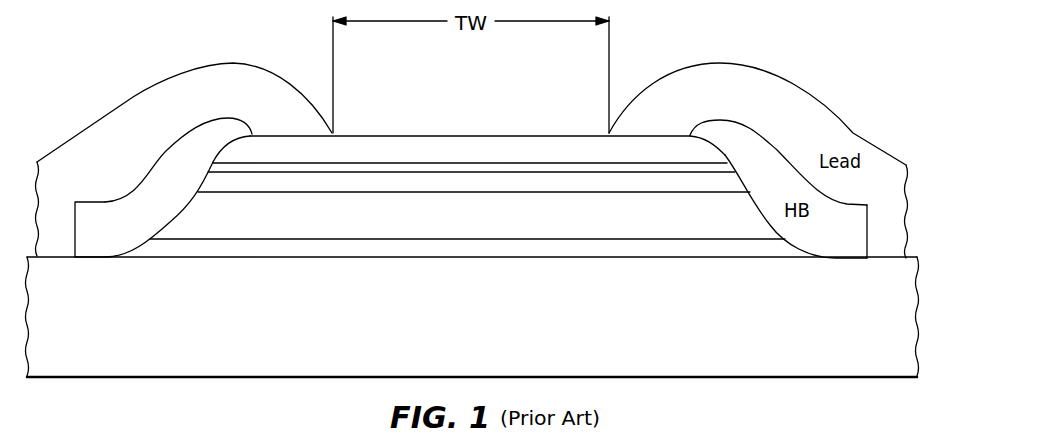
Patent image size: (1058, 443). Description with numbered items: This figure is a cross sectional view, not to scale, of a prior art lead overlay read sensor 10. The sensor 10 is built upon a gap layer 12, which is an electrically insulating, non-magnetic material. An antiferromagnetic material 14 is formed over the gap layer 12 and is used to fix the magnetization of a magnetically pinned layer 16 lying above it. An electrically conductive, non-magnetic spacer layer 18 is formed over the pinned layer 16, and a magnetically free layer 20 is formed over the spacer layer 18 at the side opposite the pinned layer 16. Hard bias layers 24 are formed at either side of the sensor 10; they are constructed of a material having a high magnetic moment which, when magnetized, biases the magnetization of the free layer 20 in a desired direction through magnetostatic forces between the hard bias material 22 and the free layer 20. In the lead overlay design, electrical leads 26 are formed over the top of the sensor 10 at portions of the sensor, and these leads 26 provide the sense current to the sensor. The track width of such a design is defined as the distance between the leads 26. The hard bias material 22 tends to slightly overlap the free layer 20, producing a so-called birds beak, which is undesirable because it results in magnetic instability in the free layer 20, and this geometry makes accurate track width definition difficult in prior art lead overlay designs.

The read sensor 10 is at (469, 135).
The gap layer 12 is at (812, 372).
The antiferromagnetic material 14 is at (447, 234).
The magnetically pinned layer 16 is at (544, 184).
The spacer layer 18 is at (286, 182).
The magnetically free layer 20 is at (375, 139).
The hard bias material 22 is at (92, 233).
The hard bias layers 24 is at (133, 100).
The electrical leads 26 is at (237, 127).